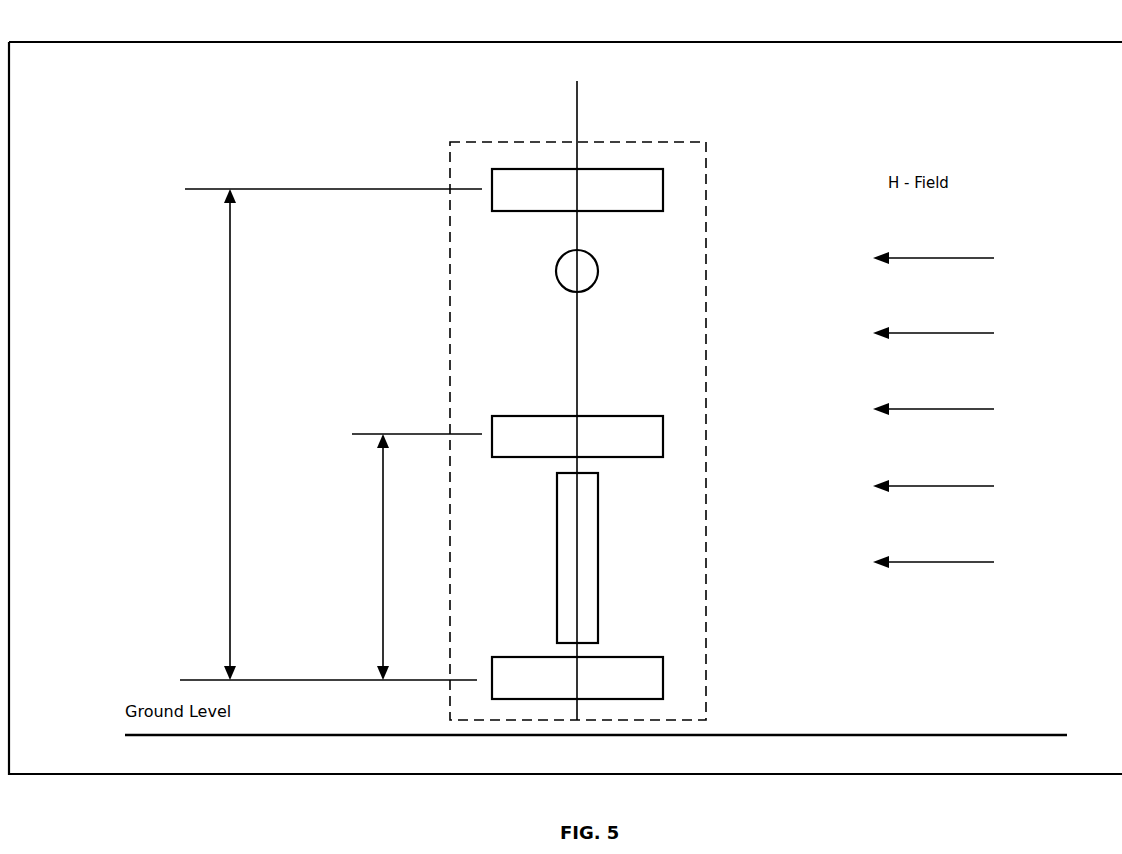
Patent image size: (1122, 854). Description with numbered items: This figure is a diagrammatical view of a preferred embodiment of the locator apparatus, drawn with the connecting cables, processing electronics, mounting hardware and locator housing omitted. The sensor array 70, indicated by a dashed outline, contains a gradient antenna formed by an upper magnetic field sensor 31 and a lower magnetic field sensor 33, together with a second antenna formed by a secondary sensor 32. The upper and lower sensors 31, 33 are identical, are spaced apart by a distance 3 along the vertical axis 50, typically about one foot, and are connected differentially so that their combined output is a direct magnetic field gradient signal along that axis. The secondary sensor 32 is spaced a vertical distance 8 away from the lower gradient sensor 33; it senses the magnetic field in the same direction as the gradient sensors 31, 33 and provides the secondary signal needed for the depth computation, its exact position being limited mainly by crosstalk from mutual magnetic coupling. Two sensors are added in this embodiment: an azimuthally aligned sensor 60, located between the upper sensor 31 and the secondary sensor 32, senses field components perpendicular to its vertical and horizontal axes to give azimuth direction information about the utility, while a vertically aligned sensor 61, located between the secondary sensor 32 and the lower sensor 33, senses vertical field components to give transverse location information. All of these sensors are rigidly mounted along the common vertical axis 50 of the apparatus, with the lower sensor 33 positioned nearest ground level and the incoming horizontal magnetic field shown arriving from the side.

The distance 3 is at (230, 432).
The vertical distance 8 is at (383, 557).
The upper magnetic field sensor 31 is at (668, 190).
The secondary sensor 32 is at (671, 434).
The lower magnetic field sensor 33 is at (671, 679).
The vertical axis 50 is at (577, 128).
The azimuthally aligned sensor 60 is at (606, 271).
The vertically aligned sensor 61 is at (603, 562).
The sensor array 70 is at (662, 142).